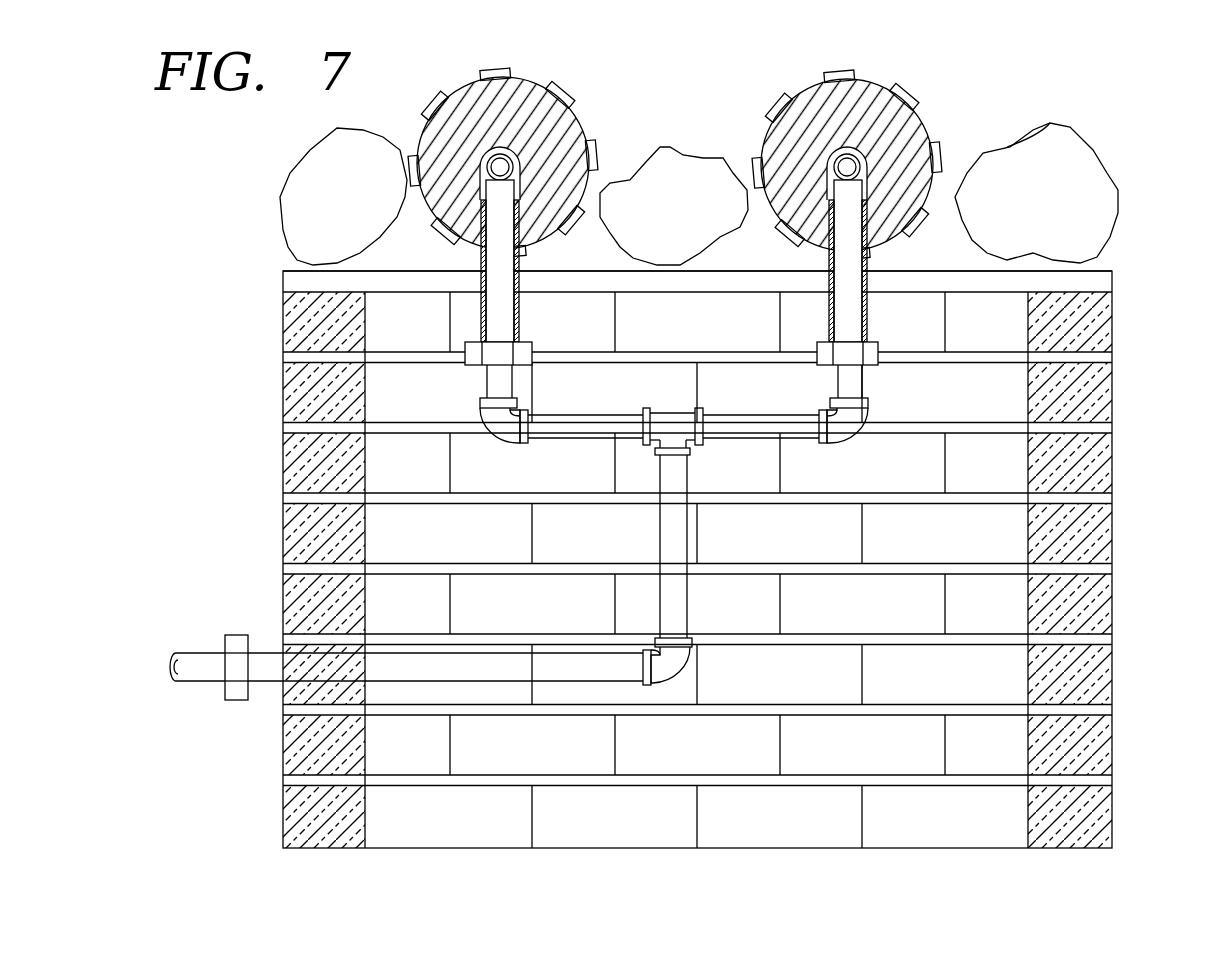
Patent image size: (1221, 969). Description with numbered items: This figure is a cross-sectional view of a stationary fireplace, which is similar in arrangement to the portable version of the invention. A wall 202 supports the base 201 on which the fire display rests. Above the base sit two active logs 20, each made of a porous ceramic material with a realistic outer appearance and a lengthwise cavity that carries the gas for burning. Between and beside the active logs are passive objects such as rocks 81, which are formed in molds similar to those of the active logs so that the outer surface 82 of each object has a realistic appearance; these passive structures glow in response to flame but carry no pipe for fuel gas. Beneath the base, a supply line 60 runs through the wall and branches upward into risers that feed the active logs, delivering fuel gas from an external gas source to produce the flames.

The active log 20 is at (781, 97).
The supply line 60 is at (673, 517).
The rock 81 is at (1057, 192).
The outer surface 82 is at (1012, 143).
The base 201 is at (1112, 277).
The wall 202 is at (1115, 667).